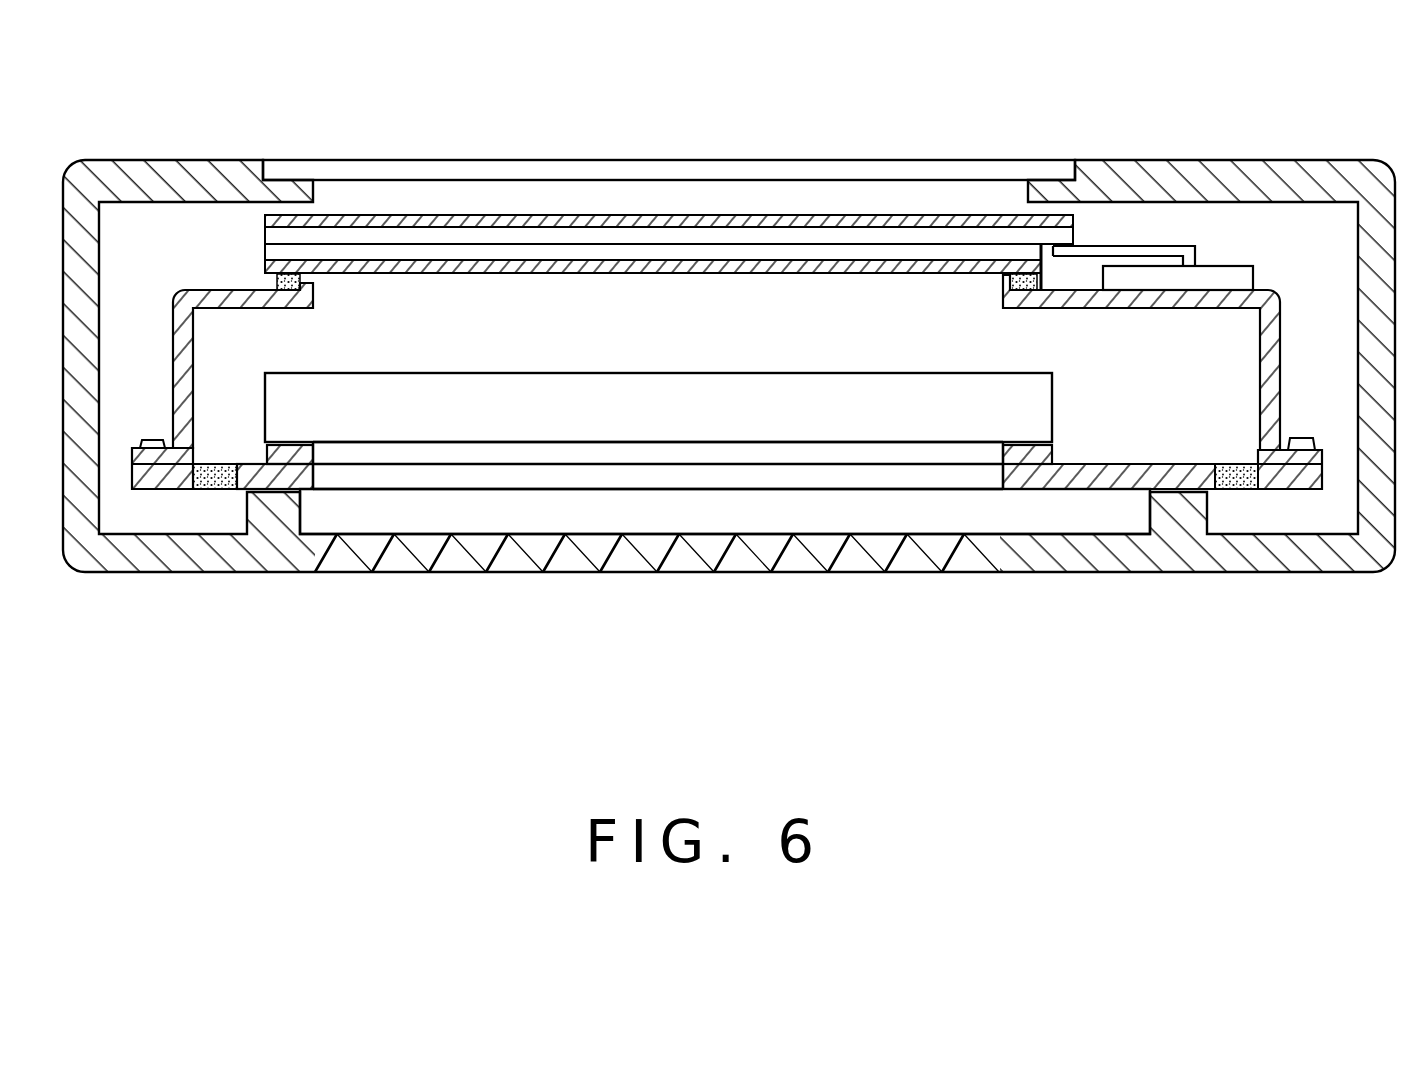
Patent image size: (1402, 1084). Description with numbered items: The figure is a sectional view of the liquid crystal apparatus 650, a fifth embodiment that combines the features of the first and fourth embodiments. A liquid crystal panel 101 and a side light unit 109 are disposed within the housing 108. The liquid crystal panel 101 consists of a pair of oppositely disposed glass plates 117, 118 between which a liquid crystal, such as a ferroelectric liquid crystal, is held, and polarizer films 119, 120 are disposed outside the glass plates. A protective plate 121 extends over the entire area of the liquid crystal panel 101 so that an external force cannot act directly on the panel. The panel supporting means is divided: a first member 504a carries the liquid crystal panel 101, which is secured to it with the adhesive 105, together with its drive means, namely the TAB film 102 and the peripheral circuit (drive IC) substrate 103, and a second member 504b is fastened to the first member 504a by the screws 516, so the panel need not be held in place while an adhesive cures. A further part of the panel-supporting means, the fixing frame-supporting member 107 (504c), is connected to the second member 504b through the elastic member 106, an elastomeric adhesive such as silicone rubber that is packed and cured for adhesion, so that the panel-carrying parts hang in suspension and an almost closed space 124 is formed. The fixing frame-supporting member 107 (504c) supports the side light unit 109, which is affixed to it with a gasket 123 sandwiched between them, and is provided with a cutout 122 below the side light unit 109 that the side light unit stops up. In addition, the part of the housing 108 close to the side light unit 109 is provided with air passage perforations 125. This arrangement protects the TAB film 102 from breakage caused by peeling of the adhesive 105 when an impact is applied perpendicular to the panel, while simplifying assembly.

The liquid crystal apparatus 650 is at (846, 125).
The liquid crystal panel 101 is at (669, 191).
The TAB film 102 is at (1118, 246).
The peripheral circuit (drive IC) substrate 103 is at (1213, 275).
The adhesive 105 is at (1020, 273).
The elastic member 106 is at (215, 478).
The fixing frame-supporting member 107 is at (332, 558).
The fixing frame-supporting member 504c is at (280, 480).
The housing 108 is at (729, 406).
The side light unit 109 is at (977, 422).
The glass plate 117 is at (647, 233).
The glass plate 118 is at (725, 250).
The polarizer film 119 is at (483, 215).
The polarizer film 120 is at (565, 260).
The protective plate 121 is at (298, 172).
The cutout 122 is at (590, 470).
The gasket 123 is at (277, 455).
The almost closed space 124 is at (1228, 362).
The air passage perforations 125 is at (797, 557).
The first member 504a is at (220, 300).
The second member 504b is at (157, 477).
The screw 516 is at (1298, 440).